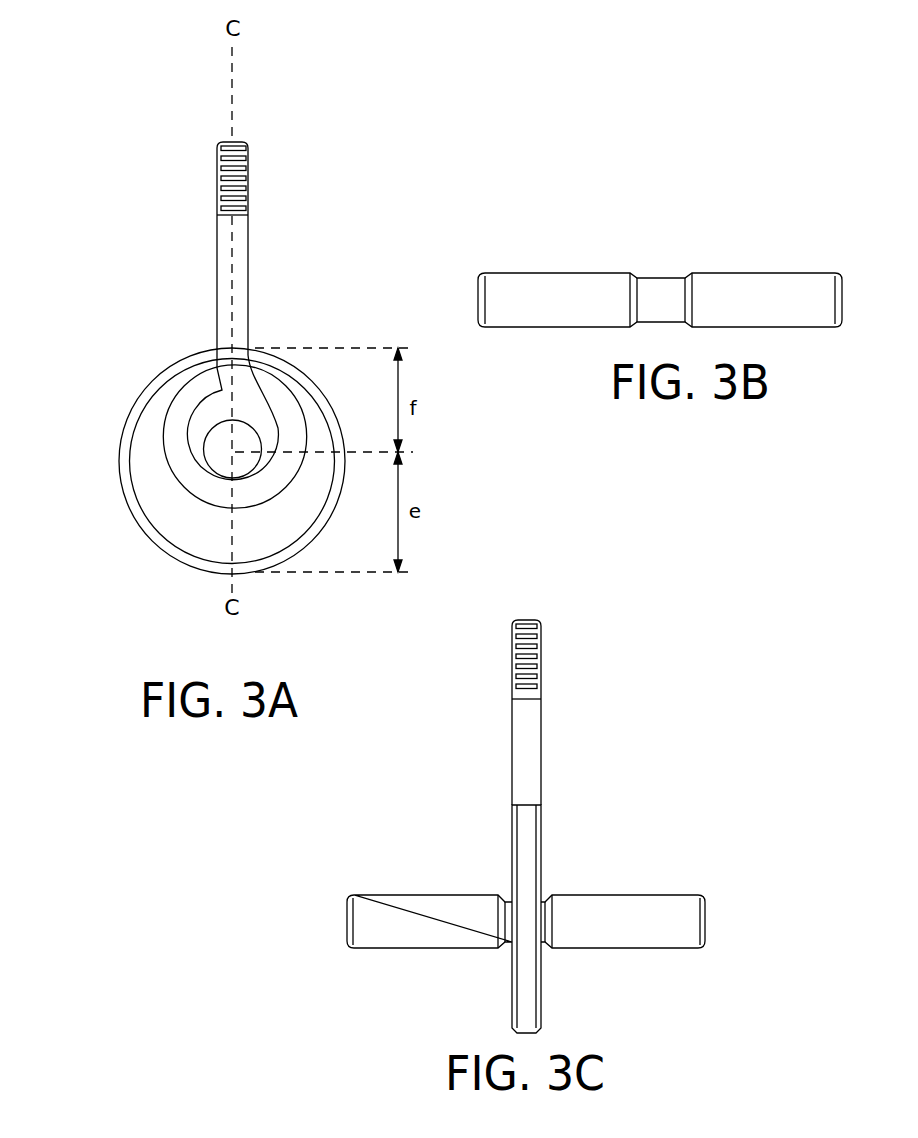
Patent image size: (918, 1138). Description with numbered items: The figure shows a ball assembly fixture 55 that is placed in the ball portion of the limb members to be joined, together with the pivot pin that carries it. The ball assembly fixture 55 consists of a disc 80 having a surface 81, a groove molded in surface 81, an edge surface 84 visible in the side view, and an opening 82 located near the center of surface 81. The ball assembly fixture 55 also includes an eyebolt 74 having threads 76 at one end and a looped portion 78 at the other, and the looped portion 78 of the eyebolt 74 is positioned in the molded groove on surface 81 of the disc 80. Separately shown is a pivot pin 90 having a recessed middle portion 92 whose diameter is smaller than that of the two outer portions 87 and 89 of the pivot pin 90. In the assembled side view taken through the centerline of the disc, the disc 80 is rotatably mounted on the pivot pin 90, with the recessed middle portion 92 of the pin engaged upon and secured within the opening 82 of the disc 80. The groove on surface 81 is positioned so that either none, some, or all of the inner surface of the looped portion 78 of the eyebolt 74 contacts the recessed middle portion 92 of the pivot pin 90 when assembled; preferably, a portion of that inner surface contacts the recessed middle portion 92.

In FIG. 3A, the ball assembly fixture 55 is at (172, 103).
In FIG. 3A, the eyebolt 74 is at (238, 277).
In FIG. 3A, the threads 76 is at (250, 163).
In FIG. 3C, the threads 76 is at (542, 649).
In FIG. 3A, the looped portion 78 is at (282, 437).
In FIG. 3A, the disc 80 is at (98, 347).
In FIG. 3A, the surface 81 is at (180, 503).
In FIG. 3A, the opening 82 is at (238, 460).
In FIG. 3C, the edge surface 84 is at (525, 840).
In FIG. 3B, the outer portion 87 is at (520, 292).
In FIG. 3B, the outer portion 89 is at (793, 300).
In FIG. 3B, the pivot pin 90 is at (723, 153).
In FIG. 3B, the recessed middle portion 92 is at (652, 307).